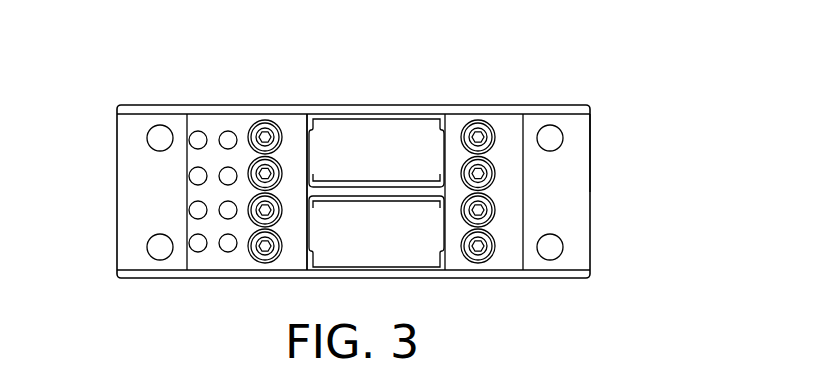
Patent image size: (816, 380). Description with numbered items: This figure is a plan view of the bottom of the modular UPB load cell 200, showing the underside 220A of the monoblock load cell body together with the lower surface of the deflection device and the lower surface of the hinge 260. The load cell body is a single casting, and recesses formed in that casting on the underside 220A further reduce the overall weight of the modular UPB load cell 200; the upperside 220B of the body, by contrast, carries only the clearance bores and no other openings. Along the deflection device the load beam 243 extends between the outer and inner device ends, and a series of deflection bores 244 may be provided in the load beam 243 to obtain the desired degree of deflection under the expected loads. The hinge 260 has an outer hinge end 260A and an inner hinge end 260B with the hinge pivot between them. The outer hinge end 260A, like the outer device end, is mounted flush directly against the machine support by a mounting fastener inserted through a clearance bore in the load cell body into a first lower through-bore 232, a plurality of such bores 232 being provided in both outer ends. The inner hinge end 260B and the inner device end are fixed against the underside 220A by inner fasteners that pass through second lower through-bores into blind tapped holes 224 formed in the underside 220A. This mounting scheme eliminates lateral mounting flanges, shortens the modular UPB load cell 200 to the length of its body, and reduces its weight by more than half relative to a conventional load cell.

The modular UPB load cell 200 is at (458, 66).
The underside of the load cell body 220A is at (327, 142).
The upperside of the load cell body 220B is at (440, 143).
The blind tapped hole 224 is at (265, 137).
The first lower through-bore 232 is at (152, 134).
The load beam 243 is at (210, 246).
The deflection bores 244 is at (227, 137).
The hinge 260 is at (562, 210).
The outer hinge end 260A is at (573, 170).
The inner hinge end 260B is at (500, 257).